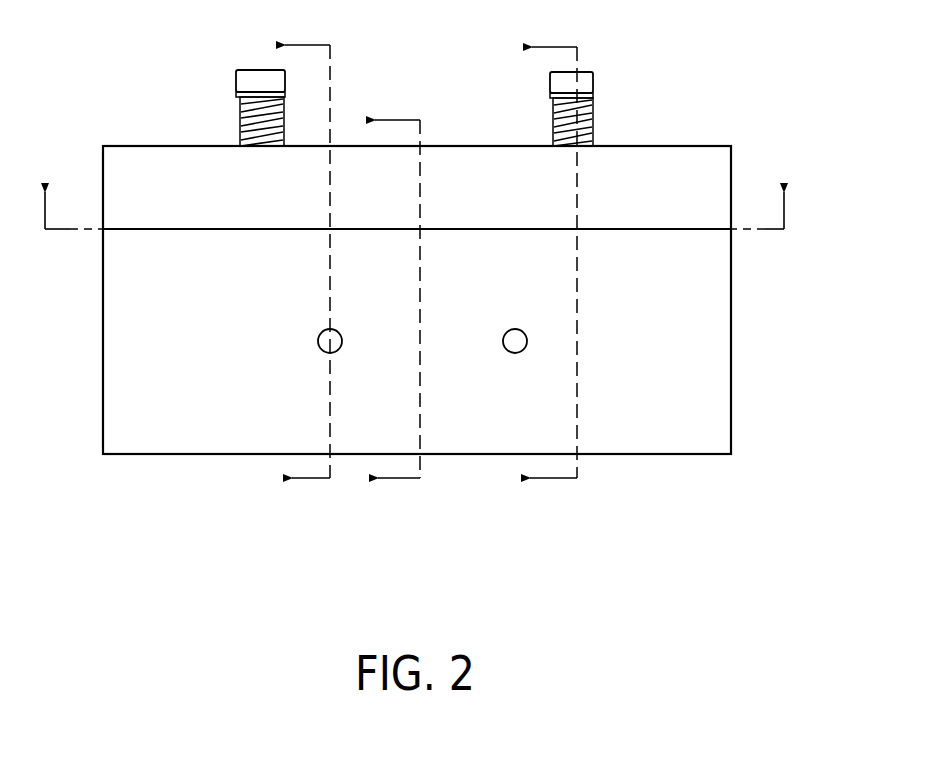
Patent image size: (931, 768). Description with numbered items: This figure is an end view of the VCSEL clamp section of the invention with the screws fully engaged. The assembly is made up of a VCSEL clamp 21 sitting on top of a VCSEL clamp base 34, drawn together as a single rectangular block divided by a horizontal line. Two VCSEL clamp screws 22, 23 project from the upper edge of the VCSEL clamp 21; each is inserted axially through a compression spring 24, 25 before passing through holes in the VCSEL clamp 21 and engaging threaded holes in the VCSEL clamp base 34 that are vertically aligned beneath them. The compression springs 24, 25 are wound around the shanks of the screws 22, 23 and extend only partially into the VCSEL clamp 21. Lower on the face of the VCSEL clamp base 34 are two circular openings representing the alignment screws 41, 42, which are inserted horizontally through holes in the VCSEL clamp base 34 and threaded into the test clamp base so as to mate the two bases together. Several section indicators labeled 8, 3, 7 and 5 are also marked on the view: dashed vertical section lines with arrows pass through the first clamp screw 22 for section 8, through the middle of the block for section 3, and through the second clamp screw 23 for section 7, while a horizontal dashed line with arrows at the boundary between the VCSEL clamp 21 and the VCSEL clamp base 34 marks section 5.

The VCSEL clamp 21 is at (705, 189).
The VCSEL clamp base 34 is at (712, 429).
The VCSEL clamp screw 22 is at (229, 81).
The compression spring 24 is at (241, 125).
The VCSEL clamp screw 23 is at (601, 81).
The compression spring 25 is at (593, 119).
The alignment screw 41 is at (318, 349).
The alignment screw 42 is at (507, 350).
The section line 8- 8 is at (318, 267).
The section line 3- 3 is at (409, 304).
The section line 7- 7 is at (564, 267).
The section line 5- 5 is at (414, 227).